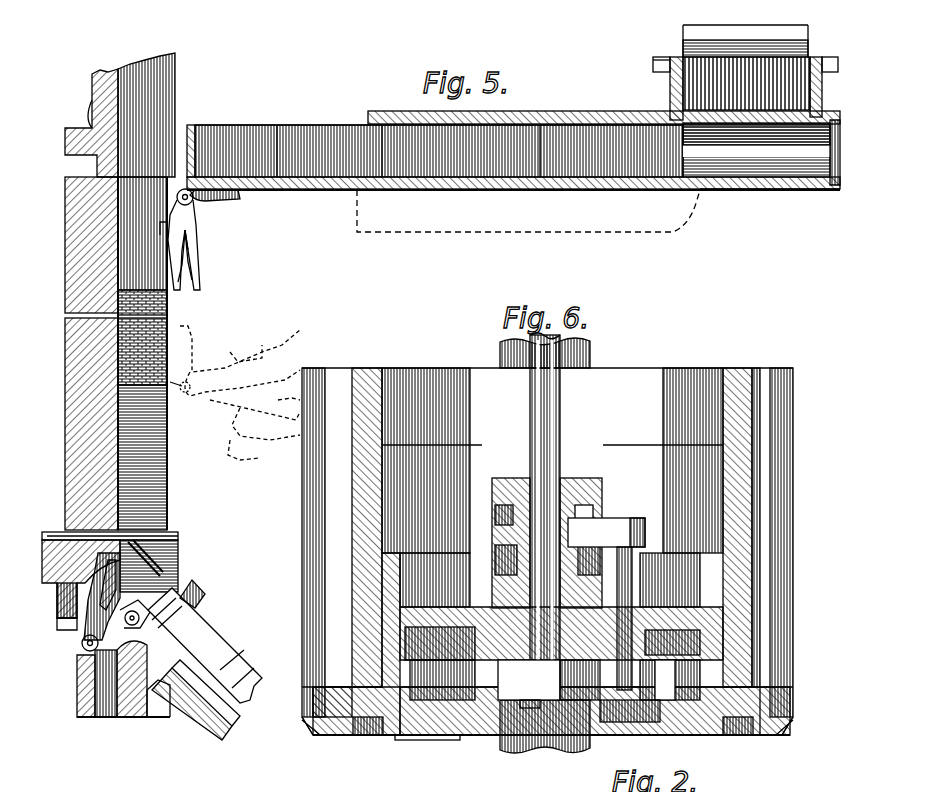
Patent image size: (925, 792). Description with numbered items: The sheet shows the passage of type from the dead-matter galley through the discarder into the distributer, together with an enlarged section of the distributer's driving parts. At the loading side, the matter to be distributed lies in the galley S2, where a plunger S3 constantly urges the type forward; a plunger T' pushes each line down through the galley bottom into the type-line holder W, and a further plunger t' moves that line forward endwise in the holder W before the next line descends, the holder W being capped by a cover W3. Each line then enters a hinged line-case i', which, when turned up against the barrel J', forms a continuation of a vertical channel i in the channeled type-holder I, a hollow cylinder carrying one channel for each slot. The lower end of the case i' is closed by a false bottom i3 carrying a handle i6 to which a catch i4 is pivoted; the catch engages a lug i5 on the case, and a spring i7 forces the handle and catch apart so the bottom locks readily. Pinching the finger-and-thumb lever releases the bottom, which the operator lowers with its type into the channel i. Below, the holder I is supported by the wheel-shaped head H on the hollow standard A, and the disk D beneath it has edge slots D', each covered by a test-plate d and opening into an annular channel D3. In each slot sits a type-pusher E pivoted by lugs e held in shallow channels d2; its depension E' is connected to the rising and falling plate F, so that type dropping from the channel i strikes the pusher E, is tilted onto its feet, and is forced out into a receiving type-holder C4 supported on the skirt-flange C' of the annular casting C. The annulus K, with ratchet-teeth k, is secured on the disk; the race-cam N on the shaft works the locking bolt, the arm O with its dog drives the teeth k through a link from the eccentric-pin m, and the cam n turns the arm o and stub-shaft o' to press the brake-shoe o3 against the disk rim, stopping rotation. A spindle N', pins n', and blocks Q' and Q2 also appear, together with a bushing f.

In FIG. 5, the barrel J' is at (88, 123).
In FIG. 5, the channeled type-holder I is at (62, 273).
In FIG. 5, the hinged line-case i' is at (479, 291).
In FIG. 6, the hinged line-case i' is at (549, 551).
In FIG. 5, the false bottom i3 is at (195, 126).
In FIG. 5, the catch i4 is at (200, 210).
In FIG. 5, the lug i5 is at (240, 198).
In FIG. 5, the handle i6 is at (196, 275).
In FIG. 5, the spring i7 is at (190, 255).
In FIG. 5, the channel i is at (235, 378).
In FIG. 5, the upper bar W3 is at (604, 101).
In FIG. 5, the type-line holder W is at (773, 152).
In FIG. 5, the plunger S3 is at (782, 117).
In FIG. 5, the galley S2 is at (747, 74).
In FIG. 5, the plunger T' is at (745, 38).
In FIG. 5, the plunger t' is at (770, 194).
In FIG. 5, the test-plate d is at (178, 534).
In FIG. 5, the disk D is at (80, 577).
In FIG. 6, the disk D is at (551, 750).
In FIG. 5, the type-pusher E is at (102, 596).
In FIG. 5, the lug e is at (144, 614).
In FIG. 5, the depension E' is at (75, 653).
In FIG. 5, the annular channel D3 is at (68, 628).
In FIG. 6, the annular channel D3 is at (368, 737).
In FIG. 5, the rising and falling plate F is at (80, 700).
In FIG. 5, the annular casting C is at (123, 691).
In FIG. 5, the skirt-flange C' is at (196, 700).
In FIG. 5, the receiving type-holder C4 is at (245, 665).
In FIG. 6, the annulus K is at (352, 665).
In FIG. 6, the sleeve f is at (440, 510).
In FIG. 6, the wheel-shaped head H is at (430, 543).
In FIG. 6, the standard A is at (588, 340).
In FIG. 6, the spindle N' is at (558, 511).
In FIG. 6, the cam n is at (511, 542).
In FIG. 6, the pin n' is at (581, 541).
In FIG. 6, the arm O is at (637, 518).
In FIG. 6, the stub-shaft o' is at (658, 618).
In FIG. 6, the race-cam N is at (441, 579).
In FIG. 6, the arm o is at (440, 643).
In FIG. 6, the block Q' is at (442, 680).
In FIG. 6, the block Q2 is at (529, 684).
In FIG. 6, the eccentric-pin m is at (575, 672).
In FIG. 6, the ratchet-teeth k is at (670, 665).
In FIG. 6, the brake-shoe o3 is at (680, 722).
In FIG. 6, the shallow channel d2 is at (330, 738).
In FIG. 6, the slot D' is at (789, 710).